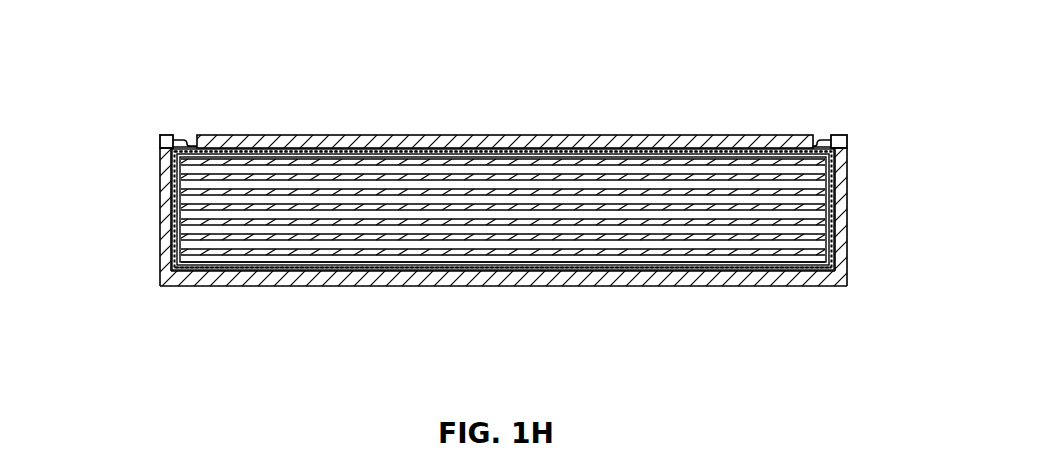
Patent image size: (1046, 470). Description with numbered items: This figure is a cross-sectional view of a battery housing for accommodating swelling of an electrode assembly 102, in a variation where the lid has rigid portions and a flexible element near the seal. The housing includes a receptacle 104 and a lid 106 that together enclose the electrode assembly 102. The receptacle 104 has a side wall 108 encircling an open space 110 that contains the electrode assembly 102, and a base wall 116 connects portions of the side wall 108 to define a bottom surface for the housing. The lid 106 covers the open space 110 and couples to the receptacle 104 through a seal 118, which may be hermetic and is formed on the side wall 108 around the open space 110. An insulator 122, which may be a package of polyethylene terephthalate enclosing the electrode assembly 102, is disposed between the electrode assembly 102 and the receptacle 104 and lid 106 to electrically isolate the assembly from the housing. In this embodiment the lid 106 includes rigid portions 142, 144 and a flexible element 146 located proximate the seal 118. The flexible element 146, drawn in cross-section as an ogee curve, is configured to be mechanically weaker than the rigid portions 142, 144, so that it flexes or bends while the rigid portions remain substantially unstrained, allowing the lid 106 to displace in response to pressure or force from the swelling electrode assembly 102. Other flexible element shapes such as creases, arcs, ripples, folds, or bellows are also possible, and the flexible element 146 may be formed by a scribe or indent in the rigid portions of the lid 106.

The electrode assembly 102 is at (250, 205).
The receptacle 104 is at (172, 189).
The lid 106 is at (435, 135).
The side wall 108 is at (160, 228).
The open space 110 is at (839, 283).
The base wall 116 is at (640, 286).
The seal 118 is at (148, 146).
The insulator 122 is at (365, 270).
The rigid portion 142 is at (165, 135).
The rigid portion 144 is at (597, 135).
The flexible element 146 is at (192, 141).